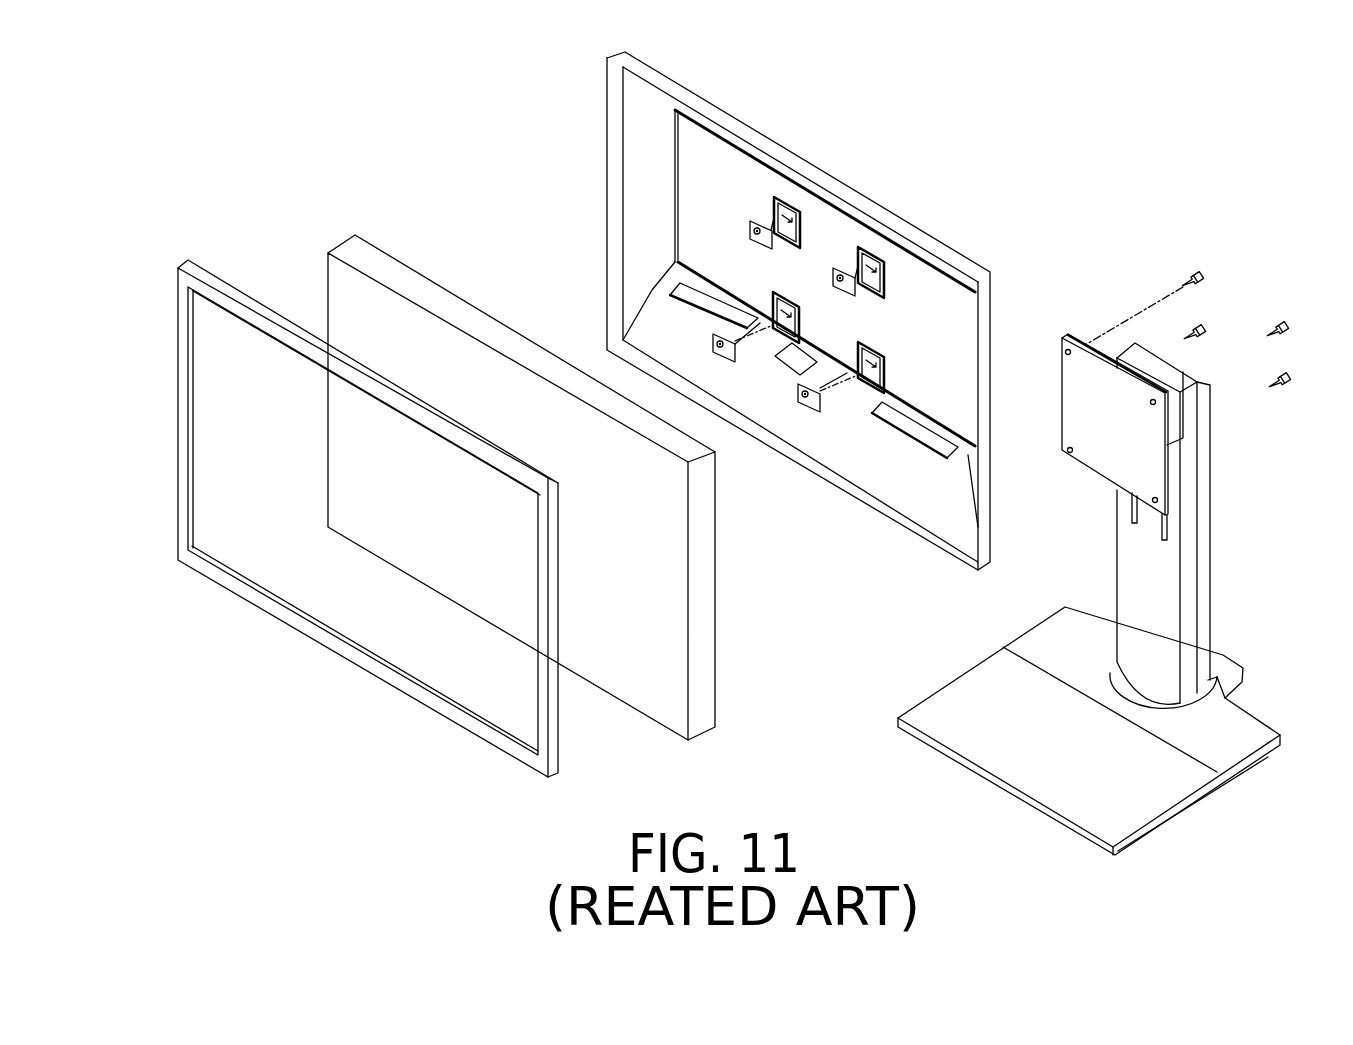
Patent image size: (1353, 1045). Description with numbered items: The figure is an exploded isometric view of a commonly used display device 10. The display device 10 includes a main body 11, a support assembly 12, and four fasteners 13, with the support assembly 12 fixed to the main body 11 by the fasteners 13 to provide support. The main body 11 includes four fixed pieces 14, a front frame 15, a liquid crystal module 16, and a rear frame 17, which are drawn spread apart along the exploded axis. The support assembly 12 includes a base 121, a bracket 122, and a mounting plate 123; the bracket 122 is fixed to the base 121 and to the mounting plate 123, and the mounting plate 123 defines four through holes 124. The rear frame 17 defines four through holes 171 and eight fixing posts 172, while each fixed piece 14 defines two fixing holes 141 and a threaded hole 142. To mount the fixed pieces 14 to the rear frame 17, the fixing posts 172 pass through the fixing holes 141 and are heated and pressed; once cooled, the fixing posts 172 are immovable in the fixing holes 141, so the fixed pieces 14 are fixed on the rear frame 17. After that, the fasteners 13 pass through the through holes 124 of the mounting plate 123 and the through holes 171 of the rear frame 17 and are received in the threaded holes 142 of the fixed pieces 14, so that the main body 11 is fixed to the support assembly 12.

The display device 10 is at (158, 272).
The main body 11 is at (382, 149).
The support assembly 12 is at (1228, 556).
The base 121 is at (958, 703).
The bracket 122 is at (1203, 507).
The mounting plate 123 is at (1096, 441).
The through holes 124 is at (1068, 453).
The fasteners 13 is at (1193, 334).
The fixed pieces 14 is at (752, 222).
The fixing holes 141 is at (737, 275).
The threaded hole 142 is at (757, 230).
The front frame 15 is at (447, 712).
The liquid crystal module 16 is at (625, 678).
The rear frame 17 is at (958, 320).
The through holes 171 is at (950, 249).
The fixing posts 172 is at (882, 270).